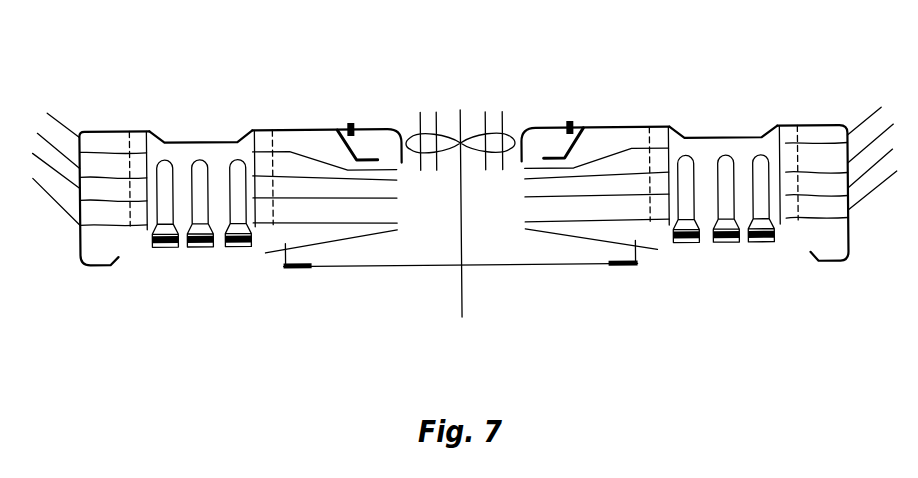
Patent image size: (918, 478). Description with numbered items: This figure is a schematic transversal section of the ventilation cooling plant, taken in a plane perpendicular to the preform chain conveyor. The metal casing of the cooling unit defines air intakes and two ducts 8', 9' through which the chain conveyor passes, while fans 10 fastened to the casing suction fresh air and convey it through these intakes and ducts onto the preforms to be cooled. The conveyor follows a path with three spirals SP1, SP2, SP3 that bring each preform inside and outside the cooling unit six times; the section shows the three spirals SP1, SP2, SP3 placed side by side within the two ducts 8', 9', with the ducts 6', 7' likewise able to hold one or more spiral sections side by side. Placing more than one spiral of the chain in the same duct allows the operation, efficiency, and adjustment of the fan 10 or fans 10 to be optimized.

The duct 8' is at (134, 133).
The duct 9' is at (768, 136).
The duct 6' is at (211, 143).
The duct 7' is at (713, 143).
The fan 10 is at (445, 137).
The spiral SP1 is at (160, 252).
The spiral SP2 is at (193, 252).
The spiral SP3 is at (237, 250).